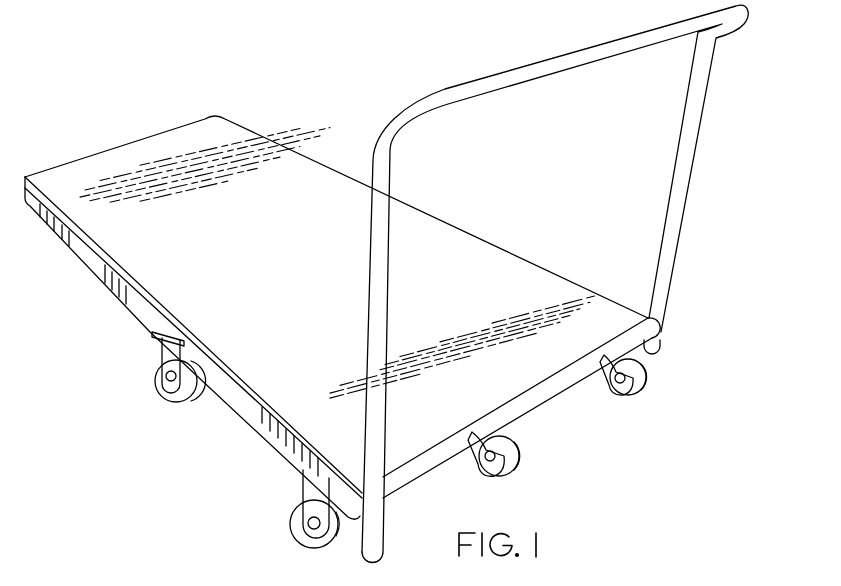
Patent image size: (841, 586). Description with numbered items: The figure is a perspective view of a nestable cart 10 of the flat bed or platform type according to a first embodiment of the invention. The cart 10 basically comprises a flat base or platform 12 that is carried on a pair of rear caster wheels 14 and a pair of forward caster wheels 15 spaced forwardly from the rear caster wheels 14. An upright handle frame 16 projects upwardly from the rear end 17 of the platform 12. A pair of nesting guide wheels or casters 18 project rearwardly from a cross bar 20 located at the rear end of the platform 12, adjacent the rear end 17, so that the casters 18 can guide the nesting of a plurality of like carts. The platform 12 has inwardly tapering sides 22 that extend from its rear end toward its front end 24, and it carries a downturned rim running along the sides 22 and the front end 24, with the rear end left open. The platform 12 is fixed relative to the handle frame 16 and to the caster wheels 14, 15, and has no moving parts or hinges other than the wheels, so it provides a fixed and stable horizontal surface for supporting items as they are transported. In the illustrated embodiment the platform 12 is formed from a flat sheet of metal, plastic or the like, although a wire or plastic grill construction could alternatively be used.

The nestable cart 10 is at (286, 130).
The platform 12 is at (145, 277).
The rear caster wheels 14 is at (297, 508).
The forward caster wheels 15 is at (165, 397).
The handle frame 16 is at (547, 68).
The rear end 17 is at (412, 463).
The nesting guide casters 18 is at (520, 443).
The cross bar 20 is at (528, 405).
The sides 22 is at (453, 227).
The front end 24 is at (125, 142).